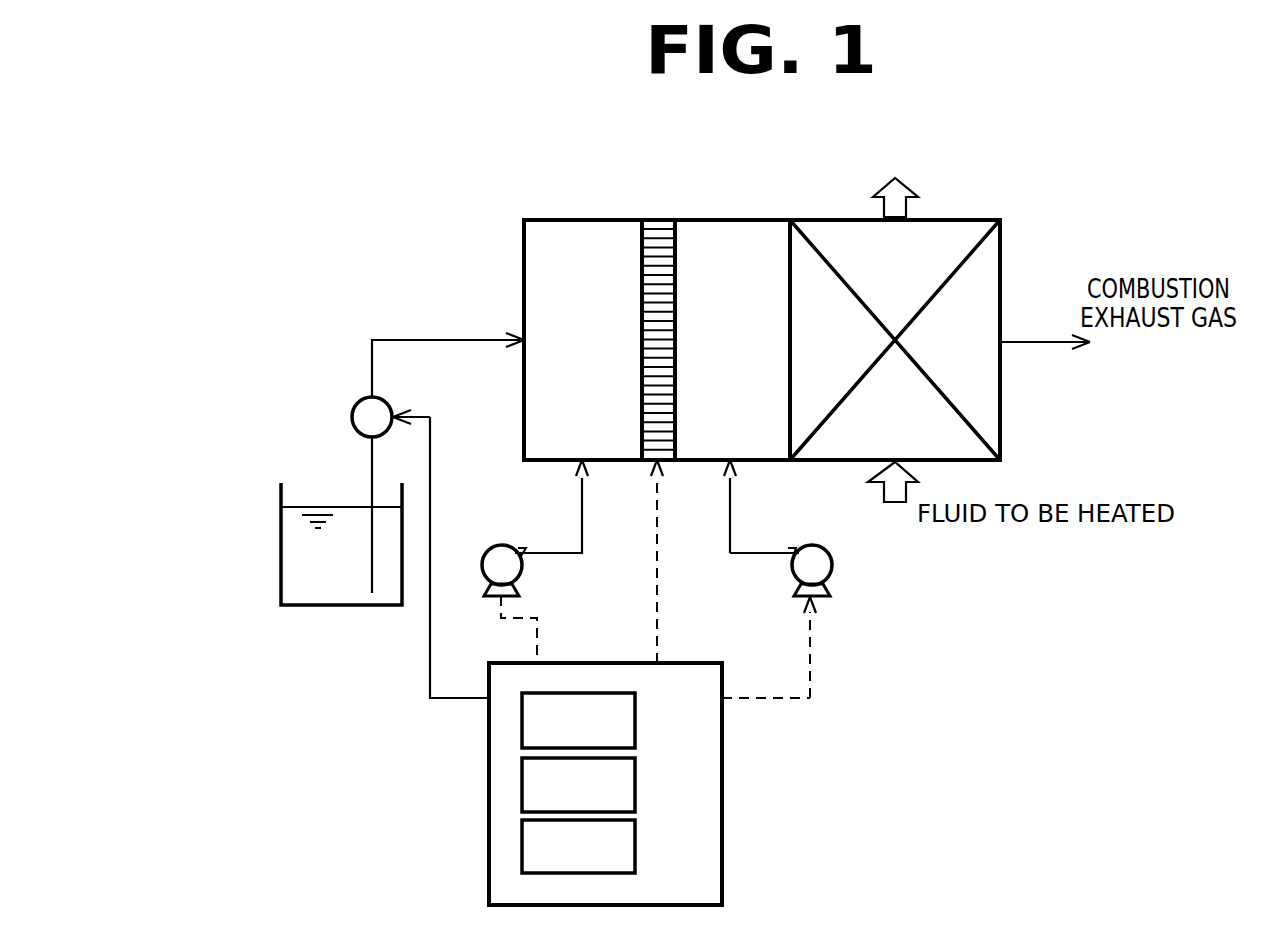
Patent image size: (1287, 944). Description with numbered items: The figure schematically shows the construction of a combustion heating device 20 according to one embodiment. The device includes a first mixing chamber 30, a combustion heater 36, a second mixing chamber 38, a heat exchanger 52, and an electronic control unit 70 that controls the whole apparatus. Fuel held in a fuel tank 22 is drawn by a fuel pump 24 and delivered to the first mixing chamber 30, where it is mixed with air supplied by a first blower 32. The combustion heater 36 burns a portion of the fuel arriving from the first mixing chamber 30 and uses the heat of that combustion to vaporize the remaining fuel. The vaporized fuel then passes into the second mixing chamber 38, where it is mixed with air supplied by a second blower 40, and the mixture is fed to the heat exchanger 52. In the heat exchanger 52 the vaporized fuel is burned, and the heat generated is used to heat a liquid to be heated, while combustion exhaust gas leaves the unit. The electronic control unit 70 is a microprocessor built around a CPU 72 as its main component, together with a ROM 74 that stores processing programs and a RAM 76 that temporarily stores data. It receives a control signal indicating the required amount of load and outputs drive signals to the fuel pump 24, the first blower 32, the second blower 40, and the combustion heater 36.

The combustion heating device 20 is at (817, 144).
The fuel tank 22 is at (281, 547).
The fuel pump 24 is at (355, 401).
The first mixing chamber 30 is at (561, 220).
The first blower 32 is at (522, 571).
The combustion heater 36 is at (657, 220).
The second mixing chamber 38 is at (735, 220).
The second blower 40 is at (832, 571).
The heat exchanger 52 is at (1002, 252).
The electronic control unit 70 is at (634, 661).
The CPU 72 is at (636, 717).
The ROM 74 is at (636, 783).
The RAM 76 is at (636, 848).